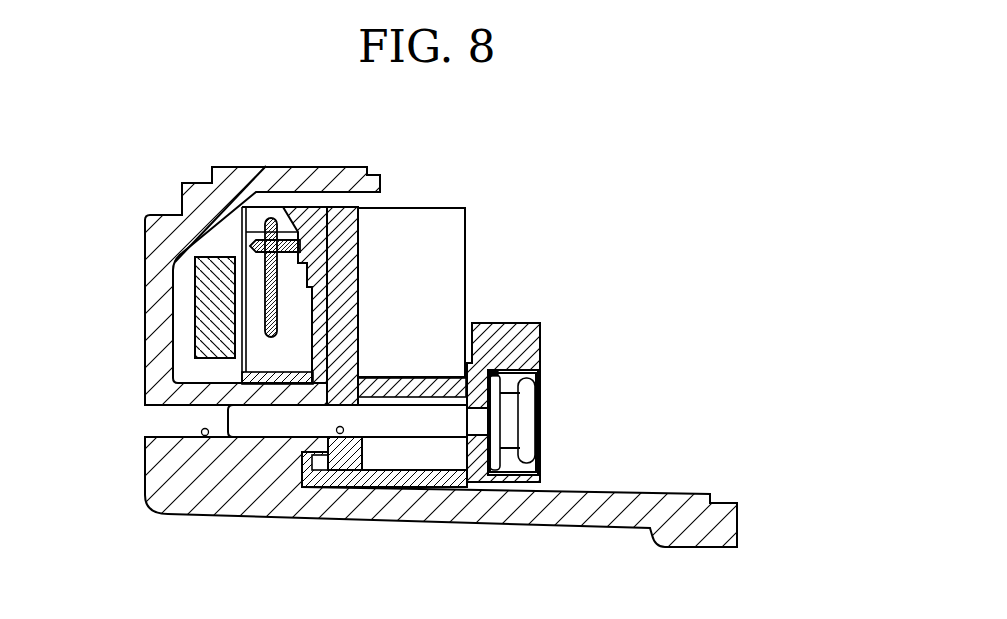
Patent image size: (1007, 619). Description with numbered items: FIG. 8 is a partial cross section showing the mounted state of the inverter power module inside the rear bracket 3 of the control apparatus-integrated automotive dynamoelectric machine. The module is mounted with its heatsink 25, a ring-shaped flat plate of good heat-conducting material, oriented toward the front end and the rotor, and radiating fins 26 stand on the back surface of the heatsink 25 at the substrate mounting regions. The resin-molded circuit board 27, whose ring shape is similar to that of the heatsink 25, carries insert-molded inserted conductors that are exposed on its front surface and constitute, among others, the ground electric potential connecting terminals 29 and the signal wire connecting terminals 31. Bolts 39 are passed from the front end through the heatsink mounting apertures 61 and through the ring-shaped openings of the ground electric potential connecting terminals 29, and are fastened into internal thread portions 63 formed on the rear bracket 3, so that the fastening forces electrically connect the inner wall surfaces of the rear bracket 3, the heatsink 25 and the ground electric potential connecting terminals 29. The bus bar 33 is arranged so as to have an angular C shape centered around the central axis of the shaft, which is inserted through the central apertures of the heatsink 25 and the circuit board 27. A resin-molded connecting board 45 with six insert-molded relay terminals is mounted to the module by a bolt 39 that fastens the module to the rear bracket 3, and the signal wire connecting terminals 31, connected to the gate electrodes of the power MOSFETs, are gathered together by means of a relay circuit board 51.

The rear bracket 3 is at (145, 488).
The heatsink 25 is at (357, 208).
The radiating fins 26 is at (443, 245).
The circuit board 27 is at (281, 207).
The ground electric potential connecting terminals 29 is at (300, 458).
The signal wire connecting terminals 31 is at (243, 247).
The bus bar 33 is at (193, 305).
The bolts 39 is at (528, 420).
The connecting board 45 is at (545, 343).
The relay circuit board 51 is at (235, 228).
The heatsink mounting apertures 61 is at (347, 440).
The internal thread portions 63 is at (196, 437).